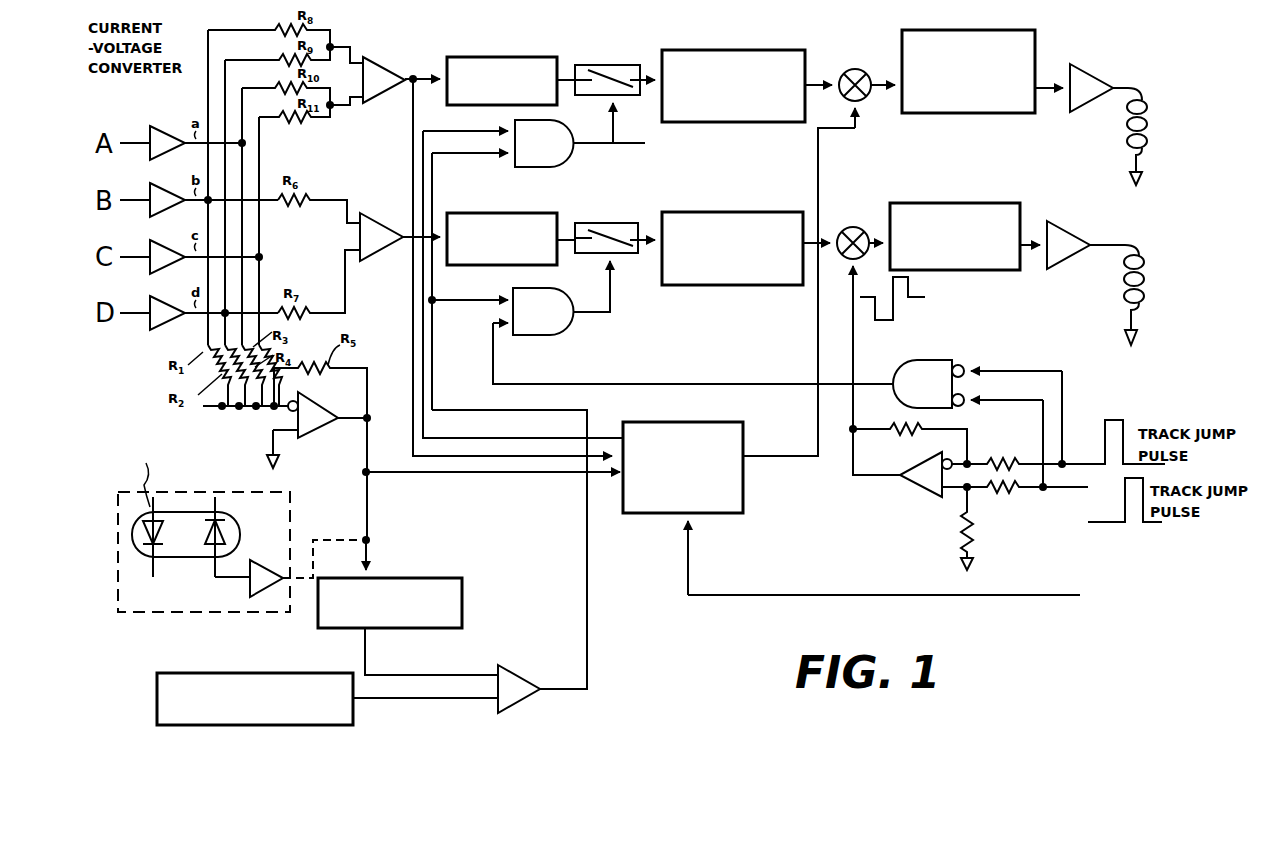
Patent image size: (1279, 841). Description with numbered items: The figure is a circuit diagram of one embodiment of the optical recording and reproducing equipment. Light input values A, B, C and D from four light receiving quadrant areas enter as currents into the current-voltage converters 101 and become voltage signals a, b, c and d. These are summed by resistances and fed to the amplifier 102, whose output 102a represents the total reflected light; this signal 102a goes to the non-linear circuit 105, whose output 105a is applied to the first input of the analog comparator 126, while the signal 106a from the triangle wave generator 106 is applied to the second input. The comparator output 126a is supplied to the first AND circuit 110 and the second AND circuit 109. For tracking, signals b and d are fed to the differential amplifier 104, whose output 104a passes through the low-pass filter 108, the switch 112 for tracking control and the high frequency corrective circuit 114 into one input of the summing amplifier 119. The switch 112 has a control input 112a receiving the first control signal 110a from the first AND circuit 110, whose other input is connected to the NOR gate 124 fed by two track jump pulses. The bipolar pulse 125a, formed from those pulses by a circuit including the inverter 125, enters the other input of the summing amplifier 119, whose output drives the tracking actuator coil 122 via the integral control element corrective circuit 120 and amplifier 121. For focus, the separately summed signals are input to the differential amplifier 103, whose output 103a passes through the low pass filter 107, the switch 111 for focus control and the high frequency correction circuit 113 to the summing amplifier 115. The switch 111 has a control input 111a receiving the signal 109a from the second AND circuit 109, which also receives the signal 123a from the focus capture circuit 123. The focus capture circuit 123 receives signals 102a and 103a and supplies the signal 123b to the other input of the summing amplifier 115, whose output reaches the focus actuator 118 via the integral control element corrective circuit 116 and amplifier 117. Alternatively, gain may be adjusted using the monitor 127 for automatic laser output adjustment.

The current-voltage converter 101 is at (152, 125).
The amplifier 102 is at (322, 432).
The output of amplifier 102a is at (366, 458).
The differential amplifier 103 is at (378, 58).
The output of differential amplifier 103a is at (416, 73).
The differential amplifier 104 is at (378, 214).
The output of amplifier 104a is at (405, 242).
The non-linear circuit 105 is at (397, 578).
The output of non-linear circuit 105a is at (400, 675).
The triangle wave generator 106 is at (283, 672).
The signal from triangle wave generator 106a is at (401, 700).
The low pass filter 107 is at (500, 56).
The low-pass filter 108 is at (494, 212).
The second AND circuit 109 is at (578, 152).
The signal from second AND circuit 109a is at (645, 143).
The first AND circuit 110 is at (566, 335).
The first control signal 110a is at (612, 313).
The switch for focus control 111 is at (598, 64).
The control input of switch 111a is at (614, 103).
The switch for tracking control 112 is at (620, 222).
The control input of switch 112a is at (620, 262).
The high frequency correction circuit 113 is at (720, 50).
The high frequency corrective circuit 114 is at (700, 212).
The summing amplifier 115 is at (859, 68).
The integral control element corrective circuit 116 is at (1043, 22).
The amplifier 117 is at (1082, 77).
The focus actuator 118 is at (1150, 118).
The summing amplifier 119 is at (855, 226).
The integral control element corrective circuit 120 is at (1022, 209).
The amplifier 121 is at (1075, 228).
The tracking actuator coil 122 is at (1148, 279).
The focus capture circuit 123 is at (683, 422).
The signal from focusing capture circuit 123a is at (478, 131).
The signal from focus capture circuit 123b is at (780, 461).
The NOR gate 124 is at (920, 360).
The inverter 125 is at (917, 490).
The bipolar pulse 125a is at (935, 297).
The analog comparator 126 is at (520, 699).
The output of comparator 126a is at (587, 572).
The monitor for automatic laser output adjustment 127 is at (227, 528).